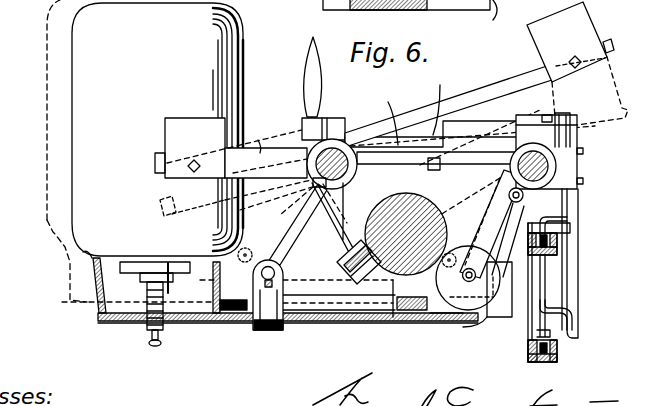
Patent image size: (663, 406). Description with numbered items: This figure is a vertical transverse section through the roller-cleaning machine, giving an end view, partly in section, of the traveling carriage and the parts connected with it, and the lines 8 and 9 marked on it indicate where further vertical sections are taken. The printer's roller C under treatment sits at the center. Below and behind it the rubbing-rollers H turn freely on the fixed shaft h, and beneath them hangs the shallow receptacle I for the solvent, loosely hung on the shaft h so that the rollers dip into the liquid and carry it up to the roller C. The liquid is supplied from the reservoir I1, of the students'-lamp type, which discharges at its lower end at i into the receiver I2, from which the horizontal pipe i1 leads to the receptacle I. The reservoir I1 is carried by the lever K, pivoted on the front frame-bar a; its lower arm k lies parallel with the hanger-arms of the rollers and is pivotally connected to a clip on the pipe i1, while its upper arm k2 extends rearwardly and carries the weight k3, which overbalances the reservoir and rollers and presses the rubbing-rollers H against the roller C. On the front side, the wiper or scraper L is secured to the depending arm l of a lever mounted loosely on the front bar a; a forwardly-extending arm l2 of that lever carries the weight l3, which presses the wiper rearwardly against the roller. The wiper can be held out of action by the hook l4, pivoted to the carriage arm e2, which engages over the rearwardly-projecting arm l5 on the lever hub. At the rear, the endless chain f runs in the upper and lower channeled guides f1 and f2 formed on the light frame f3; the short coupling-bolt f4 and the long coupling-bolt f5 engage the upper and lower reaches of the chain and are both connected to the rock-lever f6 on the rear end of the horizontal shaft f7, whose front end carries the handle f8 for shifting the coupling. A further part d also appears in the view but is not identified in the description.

The reservoir I1 is at (145, 151).
The receiver I2 is at (149, 281).
The discharge point of reservoir i is at (170, 294).
The weight l3 is at (190, 167).
The wiper L is at (278, 152).
The forwardly-extending arm l2 is at (252, 138).
The front frame-bar a is at (437, 172).
The forwardly-projecting arm of carriage e2 is at (420, 173).
The handle f8 is at (315, 88).
The section line 8 is at (332, 164).
The lever K is at (470, 106).
The upper arm of lever K k2 is at (480, 118).
The rearwardly-projecting arm l5 is at (384, 118).
The hook l4 is at (435, 103).
The weight k3 is at (577, 65).
The lower arm of lever K k is at (290, 257).
The depending wiper-arm l is at (346, 233).
The printer's roller C is at (406, 231).
The rod d is at (470, 189).
The section line 9 is at (533, 166).
The horizontal shaft f7 is at (485, 133).
The rock-lever f6 is at (600, 136).
The fixed shaft h is at (487, 243).
The rubbing-rollers H is at (477, 278).
The solvent receptacle I is at (459, 325).
The horizontal pipe i1 is at (327, 332).
The endless chain f is at (530, 248).
The upper channeled guide f1 is at (557, 251).
The short coupling-bolt f4 is at (547, 215).
The light frame f3 is at (544, 296).
The long coupling-bolt f5 is at (556, 307).
The lower channeled guide f2 is at (558, 352).